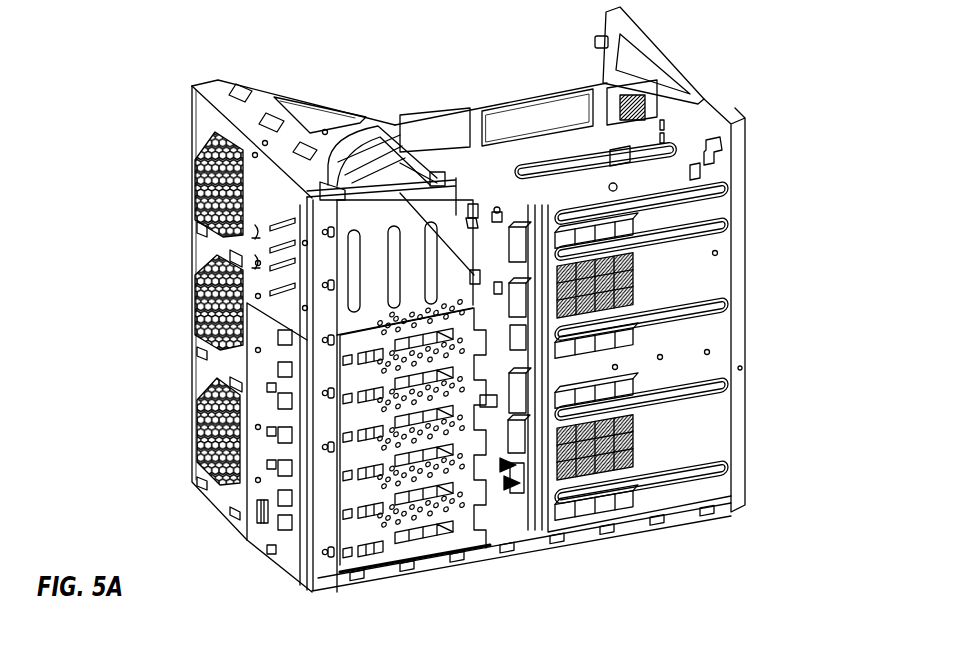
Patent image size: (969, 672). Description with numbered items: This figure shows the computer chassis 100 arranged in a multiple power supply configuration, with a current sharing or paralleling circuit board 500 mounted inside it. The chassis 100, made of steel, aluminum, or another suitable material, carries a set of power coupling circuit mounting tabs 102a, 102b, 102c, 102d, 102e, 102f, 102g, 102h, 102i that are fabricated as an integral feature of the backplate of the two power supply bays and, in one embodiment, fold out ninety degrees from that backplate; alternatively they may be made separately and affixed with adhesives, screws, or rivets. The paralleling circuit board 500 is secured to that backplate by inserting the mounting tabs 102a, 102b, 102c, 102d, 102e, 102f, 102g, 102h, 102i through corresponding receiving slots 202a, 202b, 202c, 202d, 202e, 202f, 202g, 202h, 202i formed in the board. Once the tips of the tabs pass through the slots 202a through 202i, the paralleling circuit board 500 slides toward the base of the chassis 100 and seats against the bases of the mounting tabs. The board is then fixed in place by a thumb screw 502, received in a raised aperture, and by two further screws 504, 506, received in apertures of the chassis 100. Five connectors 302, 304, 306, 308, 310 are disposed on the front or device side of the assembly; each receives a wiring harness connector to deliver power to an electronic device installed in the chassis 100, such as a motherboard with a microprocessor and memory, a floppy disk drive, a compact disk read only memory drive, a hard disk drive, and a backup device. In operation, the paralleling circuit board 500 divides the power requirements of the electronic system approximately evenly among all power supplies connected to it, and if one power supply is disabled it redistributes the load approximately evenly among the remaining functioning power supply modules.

The chassis 100 is at (777, 25).
The power coupling circuit mounting tab 102a is at (330, 112).
The power coupling circuit mounting tab 102b is at (472, 210).
The power coupling circuit mounting tab 102c is at (560, 172).
The power coupling circuit mounting tab 102d is at (683, 190).
The power coupling circuit mounting tab 102e is at (470, 315).
The power coupling circuit mounting tab 102f is at (543, 317).
The power coupling circuit mounting tab 102g is at (487, 397).
The power coupling circuit mounting tab 102h is at (600, 452).
The power coupling circuit mounting tab 102i is at (512, 440).
The slot 202a is at (440, 177).
The slot 202b is at (475, 277).
The slot 202c is at (605, 145).
The slot 202d is at (700, 205).
The slot 202e is at (483, 289).
The slot 202f is at (555, 333).
The slot 202g is at (548, 395).
The slot 202h is at (718, 474).
The slot 202i is at (495, 462).
The connector 302 is at (600, 430).
The connector 304 is at (543, 373).
The connector 306 is at (557, 222).
The connector 308 is at (645, 168).
The connector 310 is at (550, 245).
The paralleling circuit board 500 is at (618, 527).
The thumb screw 502 is at (497, 207).
The screw 504 is at (473, 210).
The screw 506 is at (474, 468).